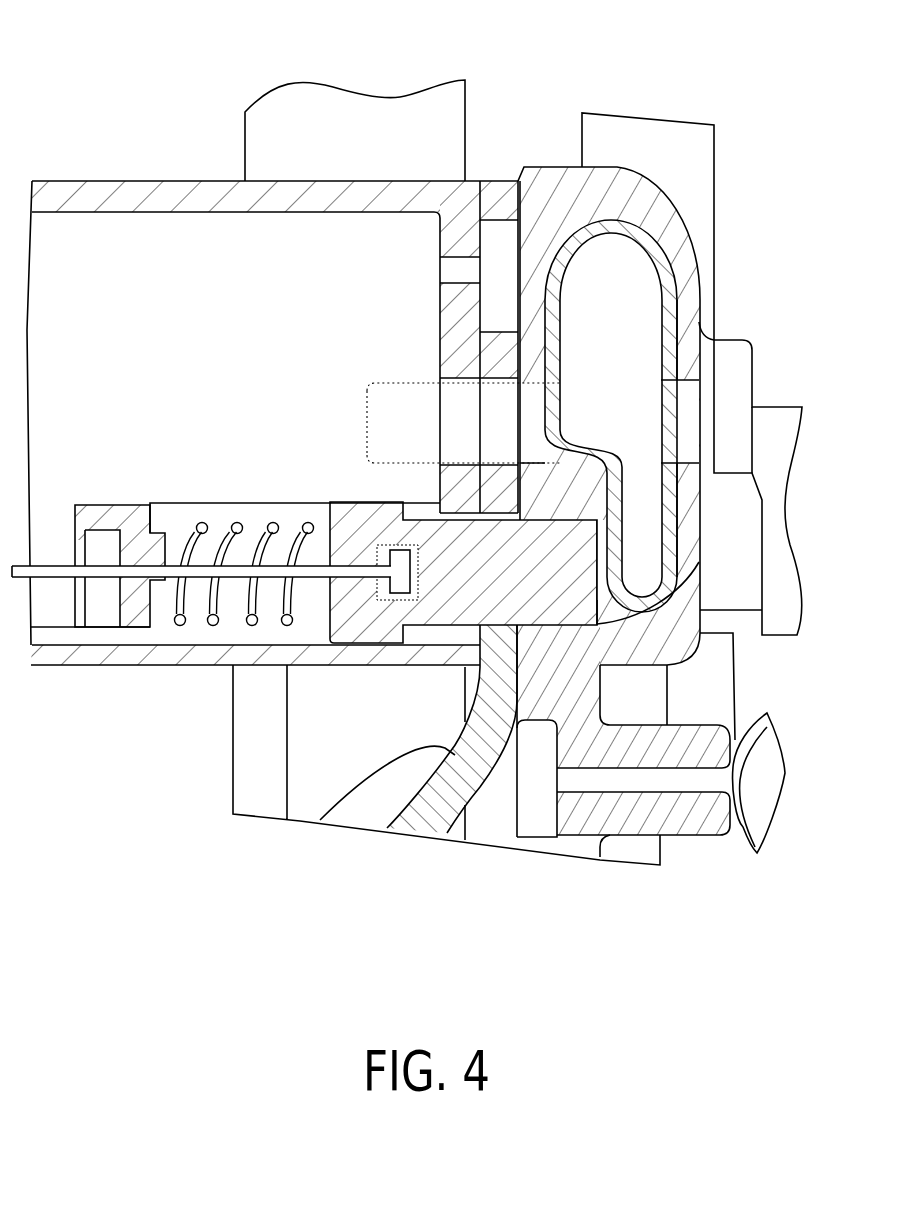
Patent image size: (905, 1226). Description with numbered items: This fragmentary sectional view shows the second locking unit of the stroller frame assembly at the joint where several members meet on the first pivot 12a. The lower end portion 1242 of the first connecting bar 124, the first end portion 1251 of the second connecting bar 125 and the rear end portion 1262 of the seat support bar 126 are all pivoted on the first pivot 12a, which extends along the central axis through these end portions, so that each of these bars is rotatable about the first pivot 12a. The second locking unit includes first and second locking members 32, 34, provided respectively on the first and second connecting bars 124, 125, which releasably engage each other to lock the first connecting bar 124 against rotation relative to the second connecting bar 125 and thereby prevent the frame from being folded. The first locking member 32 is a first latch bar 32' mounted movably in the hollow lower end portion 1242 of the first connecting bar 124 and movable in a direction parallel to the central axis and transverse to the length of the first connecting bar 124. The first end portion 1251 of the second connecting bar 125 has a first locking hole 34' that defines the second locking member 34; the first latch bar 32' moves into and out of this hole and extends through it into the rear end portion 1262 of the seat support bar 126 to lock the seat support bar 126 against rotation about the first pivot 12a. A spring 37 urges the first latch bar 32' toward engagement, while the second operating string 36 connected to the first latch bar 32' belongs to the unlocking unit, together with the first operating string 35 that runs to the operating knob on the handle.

The second operating string 36 is at (173, 568).
The spring 37 is at (224, 578).
The first locking member 32 is at (429, 326).
The first latch bar 32' is at (463, 572).
The second locking member 34 is at (435, 265).
The first locking hole 34' is at (460, 347).
The first operating string 35 is at (504, 283).
The seat support bar 126 is at (616, 337).
The rear end portion of the seat support bar 1262 is at (570, 200).
The first pivot 12a is at (397, 383).
The first connecting bar 124 is at (343, 523).
The lower end portion of the first connecting bar 1242 is at (87, 662).
The second connecting bar 125 is at (527, 783).
The first end portion of the second connecting bar 1251 is at (482, 752).